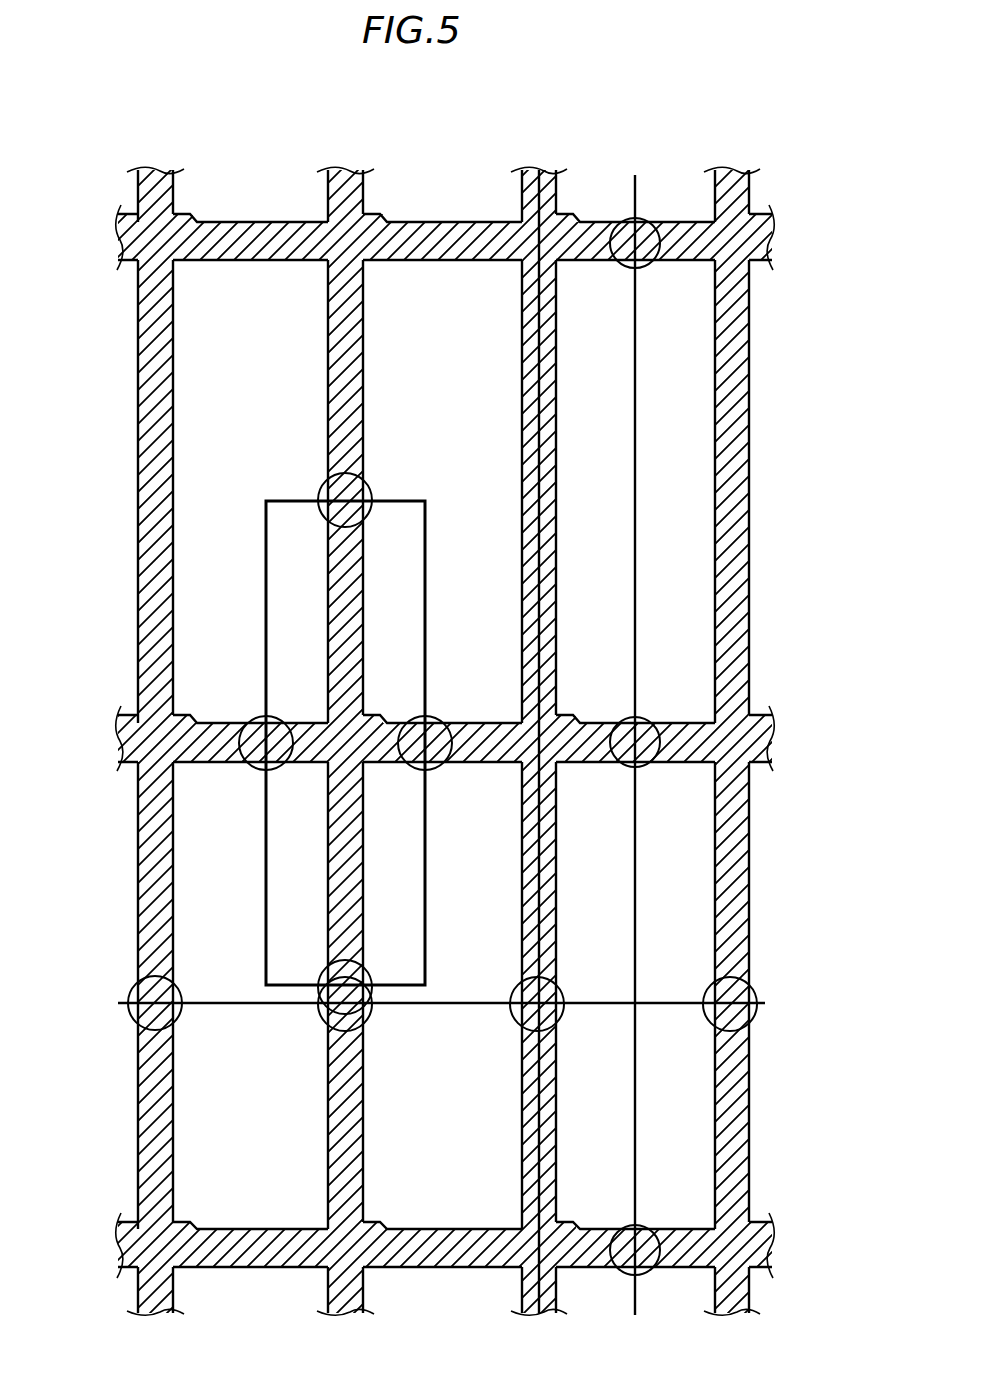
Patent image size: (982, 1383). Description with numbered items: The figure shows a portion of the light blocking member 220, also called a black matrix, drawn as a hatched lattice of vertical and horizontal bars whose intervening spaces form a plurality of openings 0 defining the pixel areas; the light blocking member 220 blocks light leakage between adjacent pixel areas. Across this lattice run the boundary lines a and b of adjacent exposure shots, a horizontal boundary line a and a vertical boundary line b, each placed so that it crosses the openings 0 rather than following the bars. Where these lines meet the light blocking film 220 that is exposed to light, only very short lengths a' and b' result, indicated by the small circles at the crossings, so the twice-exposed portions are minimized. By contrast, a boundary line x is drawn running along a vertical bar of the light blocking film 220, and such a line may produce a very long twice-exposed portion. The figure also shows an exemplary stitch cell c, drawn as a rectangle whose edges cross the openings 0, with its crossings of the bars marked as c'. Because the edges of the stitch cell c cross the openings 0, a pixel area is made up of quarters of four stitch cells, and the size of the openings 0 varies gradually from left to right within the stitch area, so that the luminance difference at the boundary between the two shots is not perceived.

The light blocking member 220 is at (750, 393).
The opening 0 is at (677, 477).
The boundary line x is at (553, 213).
The boundary line b is at (718, 745).
The length of boundary line b meeting the light blocking film b' is at (705, 686).
The stitch cell c is at (254, 743).
The edge crossing of stitch cell c' is at (251, 743).
The boundary line a is at (450, 959).
The length of boundary line a meeting the light blocking film a' is at (440, 1030).